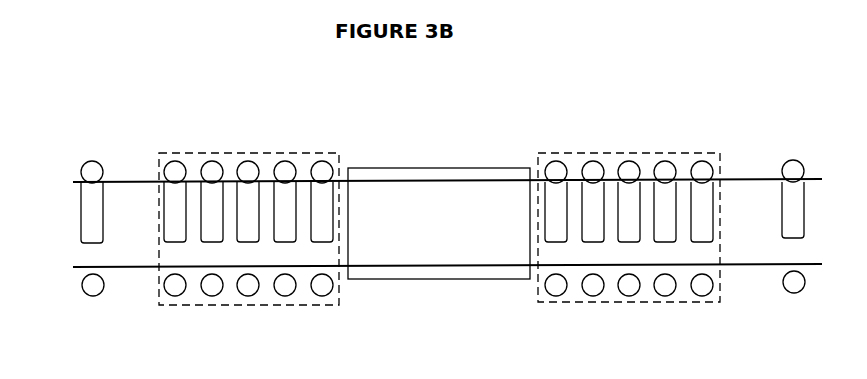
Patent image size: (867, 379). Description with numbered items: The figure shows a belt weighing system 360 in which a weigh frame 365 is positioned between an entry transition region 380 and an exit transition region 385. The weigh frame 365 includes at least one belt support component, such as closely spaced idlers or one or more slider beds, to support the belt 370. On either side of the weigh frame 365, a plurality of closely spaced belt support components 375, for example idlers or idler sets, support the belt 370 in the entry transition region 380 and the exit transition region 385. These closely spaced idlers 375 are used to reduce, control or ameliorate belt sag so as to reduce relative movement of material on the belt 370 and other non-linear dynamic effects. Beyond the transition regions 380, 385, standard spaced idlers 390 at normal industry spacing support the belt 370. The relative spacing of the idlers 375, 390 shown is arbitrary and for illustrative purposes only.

The belt weighing system 360 is at (472, 107).
The weigh frame 365 is at (435, 280).
The belt 370 is at (743, 198).
The closely spaced belt support components 375 is at (245, 296).
The entry transition region 380 is at (279, 152).
The exit transition region 385 is at (615, 150).
The standard spaced idlers 390 is at (92, 296).